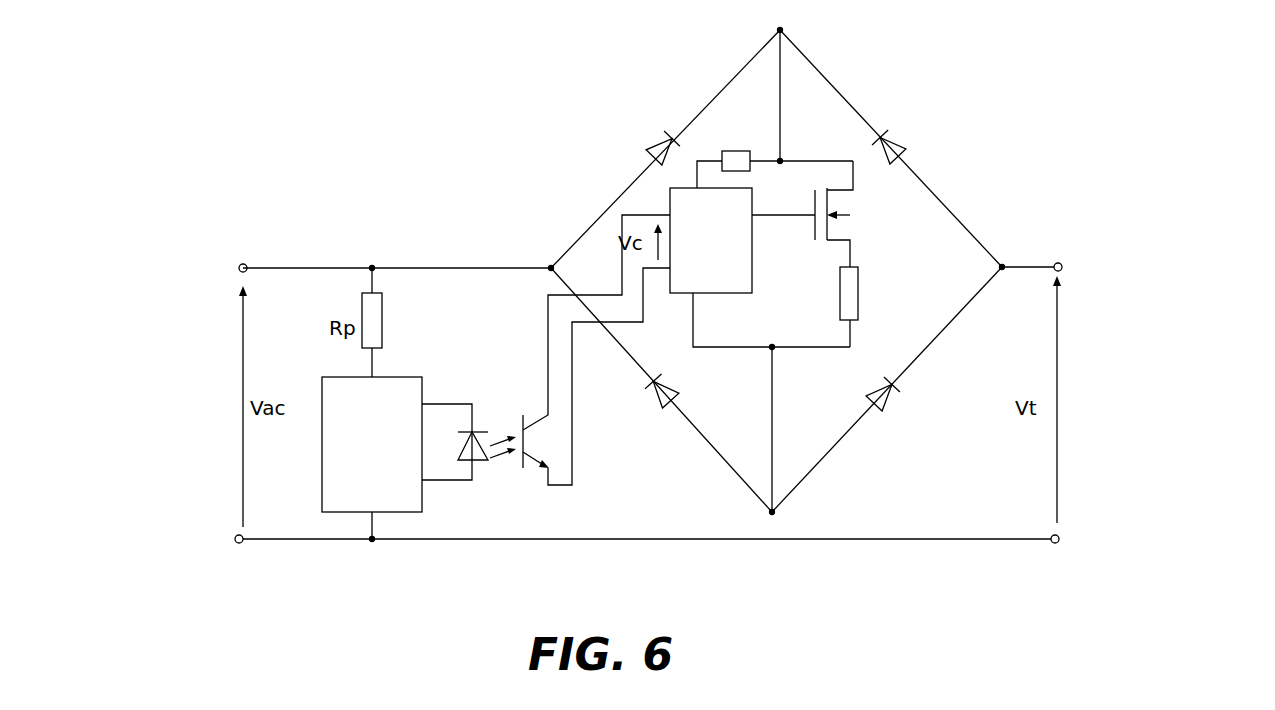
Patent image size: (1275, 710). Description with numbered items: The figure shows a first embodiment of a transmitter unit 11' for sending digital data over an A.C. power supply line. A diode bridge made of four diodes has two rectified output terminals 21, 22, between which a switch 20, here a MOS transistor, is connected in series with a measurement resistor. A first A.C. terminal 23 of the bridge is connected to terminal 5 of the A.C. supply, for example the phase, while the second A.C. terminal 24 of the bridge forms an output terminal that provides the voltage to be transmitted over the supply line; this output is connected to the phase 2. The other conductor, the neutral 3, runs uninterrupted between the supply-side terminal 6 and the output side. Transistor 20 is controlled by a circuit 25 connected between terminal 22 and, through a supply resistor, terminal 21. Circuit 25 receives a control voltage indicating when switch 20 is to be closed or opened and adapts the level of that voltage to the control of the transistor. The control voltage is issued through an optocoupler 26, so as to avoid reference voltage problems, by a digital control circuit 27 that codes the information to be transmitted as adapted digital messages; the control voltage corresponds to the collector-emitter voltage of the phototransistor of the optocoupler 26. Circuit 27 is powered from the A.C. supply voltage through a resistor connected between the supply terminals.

The phase 2 is at (1030, 267).
The neutral 3 is at (600, 539).
The terminal of A.C. supply 5 is at (243, 256).
The terminal of A.C. supply 6 is at (239, 546).
The transmitter unit 11' is at (711, 271).
The switch 20 is at (864, 217).
The rectified output terminal 21 is at (781, 30).
The rectified output terminal 22 is at (773, 513).
The first A.C. terminal 23 is at (551, 268).
The second A.C. terminal 24 is at (1002, 266).
The control circuit 25 is at (752, 262).
The optocoupler 26 is at (507, 403).
The digital control circuit 27 is at (402, 377).